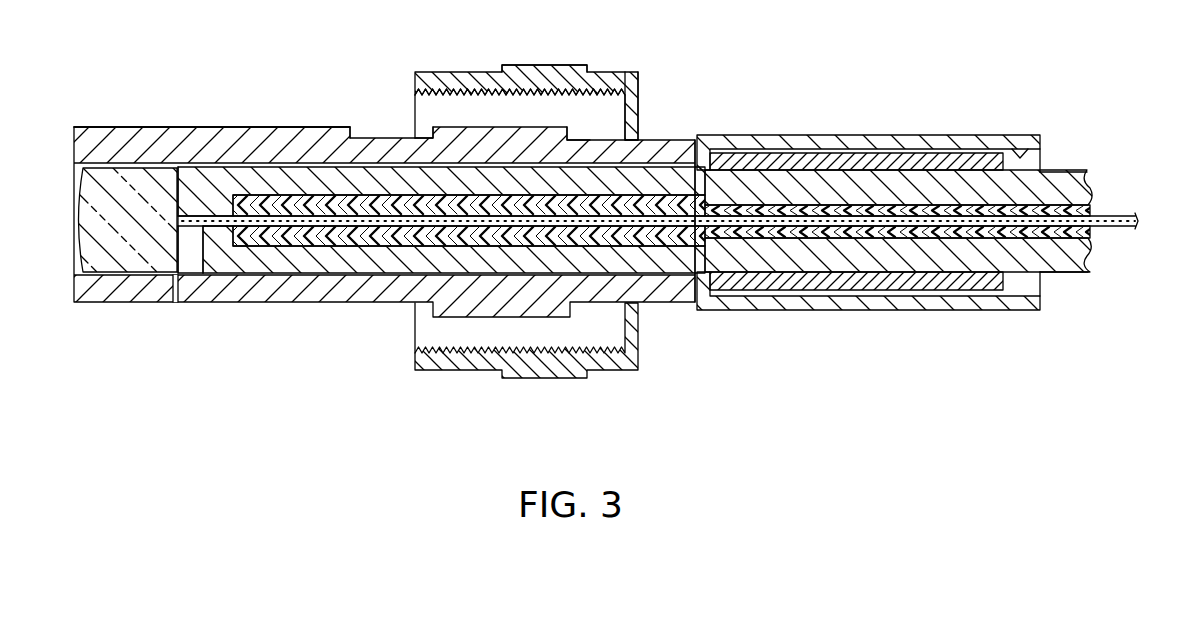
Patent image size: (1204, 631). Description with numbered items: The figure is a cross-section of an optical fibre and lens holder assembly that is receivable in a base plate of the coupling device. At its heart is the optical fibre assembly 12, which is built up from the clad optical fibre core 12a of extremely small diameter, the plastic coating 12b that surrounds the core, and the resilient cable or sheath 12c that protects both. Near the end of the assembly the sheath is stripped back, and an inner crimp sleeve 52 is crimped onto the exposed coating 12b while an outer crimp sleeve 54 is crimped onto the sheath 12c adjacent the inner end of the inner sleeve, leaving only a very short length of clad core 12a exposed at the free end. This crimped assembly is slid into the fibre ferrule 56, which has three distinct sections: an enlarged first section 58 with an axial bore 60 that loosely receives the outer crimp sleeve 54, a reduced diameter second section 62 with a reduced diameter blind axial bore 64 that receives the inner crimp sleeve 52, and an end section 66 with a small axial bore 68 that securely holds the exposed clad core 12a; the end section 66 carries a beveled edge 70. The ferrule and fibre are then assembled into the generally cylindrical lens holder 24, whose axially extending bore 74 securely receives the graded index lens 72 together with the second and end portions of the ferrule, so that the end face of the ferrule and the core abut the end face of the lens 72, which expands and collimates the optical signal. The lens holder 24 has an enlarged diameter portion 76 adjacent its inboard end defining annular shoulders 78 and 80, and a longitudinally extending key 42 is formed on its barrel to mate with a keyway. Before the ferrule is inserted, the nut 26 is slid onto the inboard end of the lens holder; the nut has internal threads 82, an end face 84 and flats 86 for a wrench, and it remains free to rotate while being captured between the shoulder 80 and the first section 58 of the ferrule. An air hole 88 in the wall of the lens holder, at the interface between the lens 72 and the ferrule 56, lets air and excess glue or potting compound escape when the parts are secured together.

The optical fibre assembly 12 is at (1077, 153).
The clad optical fibre core 12a is at (1140, 221).
The plastic coating 12b is at (1100, 205).
The cable or sheath 12c is at (1088, 262).
The lens holder 24 is at (290, 100).
The nut 26 is at (532, 56).
The key 42 is at (122, 127).
The inner crimp sleeve 52 is at (356, 195).
The outer crimp sleeve 54 is at (812, 160).
The fibre ferrule 56 is at (836, 318).
The first section 58 is at (907, 295).
The axial bore 60 is at (1033, 140).
The second section 62 is at (380, 258).
The blind axial bore 64 is at (322, 250).
The end section 66 is at (205, 258).
The small axial bore 68 is at (213, 225).
The beveled edge 70 is at (181, 175).
The graded index lens 72 is at (110, 250).
The bore 74 is at (678, 262).
The enlarged diameter portion 76 is at (483, 323).
The annular shoulder 78 is at (432, 137).
The annular shoulder 80 is at (570, 138).
The internal threads 82 is at (440, 92).
The end face 84 is at (632, 115).
The flats 86 is at (571, 64).
The air hole 88 is at (177, 302).